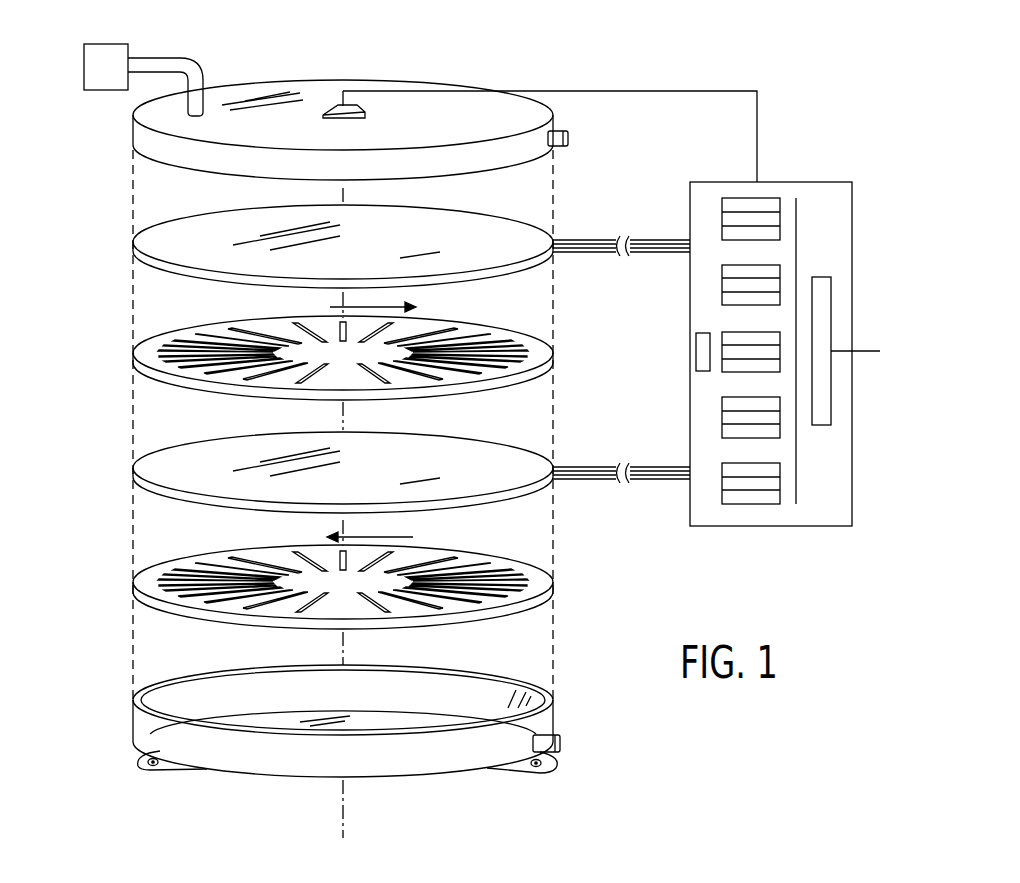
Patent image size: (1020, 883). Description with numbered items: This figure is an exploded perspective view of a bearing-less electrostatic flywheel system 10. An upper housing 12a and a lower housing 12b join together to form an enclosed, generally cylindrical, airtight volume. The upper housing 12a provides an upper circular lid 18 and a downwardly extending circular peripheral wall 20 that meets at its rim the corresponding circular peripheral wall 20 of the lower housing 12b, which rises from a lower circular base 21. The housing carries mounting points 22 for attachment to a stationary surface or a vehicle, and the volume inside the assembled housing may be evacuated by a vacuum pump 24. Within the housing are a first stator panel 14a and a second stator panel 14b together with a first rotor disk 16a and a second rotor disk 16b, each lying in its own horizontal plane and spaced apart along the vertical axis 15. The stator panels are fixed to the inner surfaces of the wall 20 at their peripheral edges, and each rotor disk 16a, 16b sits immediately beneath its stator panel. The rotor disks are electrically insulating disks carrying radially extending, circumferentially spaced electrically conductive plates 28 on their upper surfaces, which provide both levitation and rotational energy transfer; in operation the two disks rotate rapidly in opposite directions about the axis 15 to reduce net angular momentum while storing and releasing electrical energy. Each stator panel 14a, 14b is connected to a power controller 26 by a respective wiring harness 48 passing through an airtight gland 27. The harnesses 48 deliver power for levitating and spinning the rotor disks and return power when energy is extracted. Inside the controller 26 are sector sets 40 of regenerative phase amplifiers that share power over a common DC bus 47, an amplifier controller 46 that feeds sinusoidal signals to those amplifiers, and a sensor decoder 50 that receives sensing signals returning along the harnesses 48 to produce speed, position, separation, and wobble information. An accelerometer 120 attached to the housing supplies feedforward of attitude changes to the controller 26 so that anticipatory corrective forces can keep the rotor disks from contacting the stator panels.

The bearing-less electrostatic flywheel system 10 is at (57, 265).
The upper housing 12a is at (401, 382).
The lower housing 12b is at (328, 745).
The first stator panel 14a is at (168, 220).
The second stator panel 14b is at (168, 448).
The vertical axis 15 is at (340, 828).
The first rotor disk 16a is at (337, 365).
The second rotor disk 16b is at (168, 562).
The upper circular lid 18 is at (318, 85).
The circular peripheral wall 20 is at (163, 148).
The lower circular base 21 is at (400, 723).
The mounting points 22 is at (152, 772).
The vacuum pump 24 is at (83, 66).
The power controller 26 is at (770, 340).
The airtight glands 27 is at (560, 132).
The electrically conductive plates 28 is at (503, 368).
The sector sets 40 is at (780, 280).
The amplifier controller 46 is at (831, 320).
The common DC bus 47 is at (797, 452).
The wiring harness 48 is at (658, 236).
The sensor decoder 50 is at (696, 352).
The accelerometer 120 is at (357, 112).